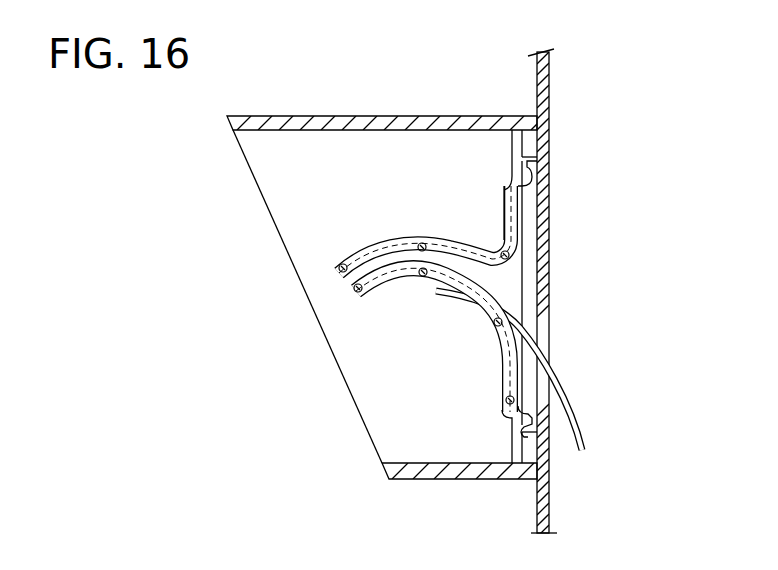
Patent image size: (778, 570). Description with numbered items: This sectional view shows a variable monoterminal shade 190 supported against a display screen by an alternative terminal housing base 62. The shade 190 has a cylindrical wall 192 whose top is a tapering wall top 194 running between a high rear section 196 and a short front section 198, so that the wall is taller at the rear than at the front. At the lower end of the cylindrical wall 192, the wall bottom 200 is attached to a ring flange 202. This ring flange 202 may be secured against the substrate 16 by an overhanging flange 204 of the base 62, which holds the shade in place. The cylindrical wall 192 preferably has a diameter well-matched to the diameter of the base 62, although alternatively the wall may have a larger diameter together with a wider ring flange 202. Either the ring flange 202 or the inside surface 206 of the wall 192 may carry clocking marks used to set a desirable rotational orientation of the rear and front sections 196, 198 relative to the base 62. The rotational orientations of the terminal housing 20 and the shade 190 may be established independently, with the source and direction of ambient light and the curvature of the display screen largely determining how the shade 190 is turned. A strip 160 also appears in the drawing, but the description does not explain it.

The substrate 16 is at (530, 75).
The terminal housing 20 is at (372, 242).
The base 62 is at (503, 196).
The strip 160 is at (540, 335).
The variable monoterminal shade 190 is at (283, 112).
The cylindrical wall 192 is at (296, 213).
The tapering wall top 194 is at (256, 187).
The high rear section 196 is at (393, 115).
The short front section 198 is at (441, 481).
The wall bottom 200 is at (522, 115).
The ring flange 202 is at (535, 138).
The overhanging flange 204 is at (512, 148).
The inside surface 206 is at (485, 131).